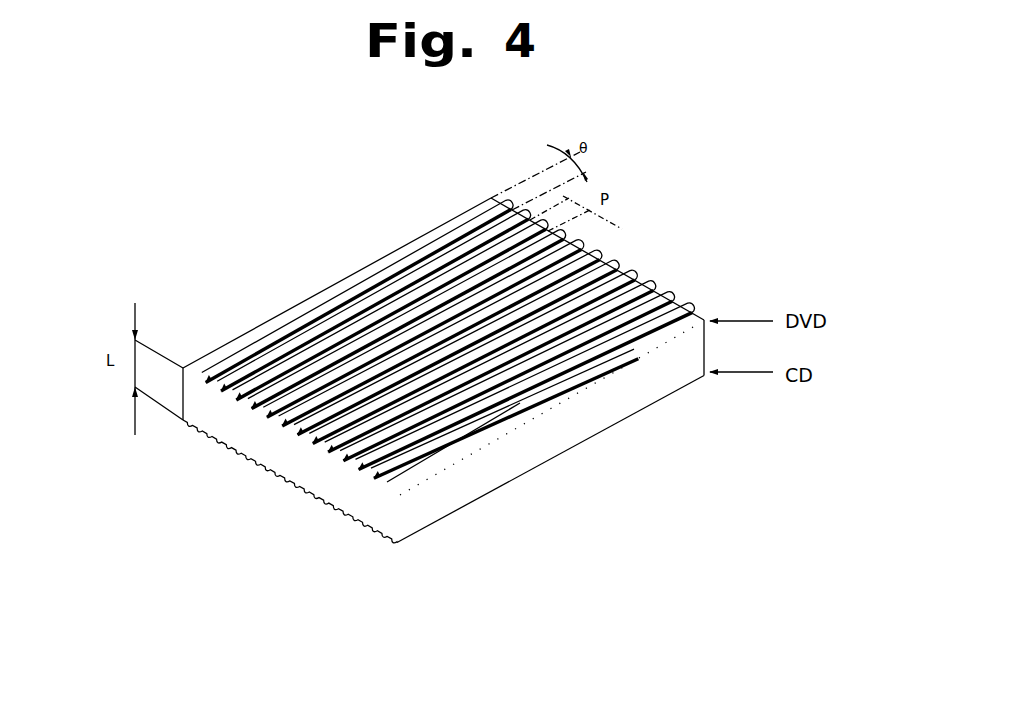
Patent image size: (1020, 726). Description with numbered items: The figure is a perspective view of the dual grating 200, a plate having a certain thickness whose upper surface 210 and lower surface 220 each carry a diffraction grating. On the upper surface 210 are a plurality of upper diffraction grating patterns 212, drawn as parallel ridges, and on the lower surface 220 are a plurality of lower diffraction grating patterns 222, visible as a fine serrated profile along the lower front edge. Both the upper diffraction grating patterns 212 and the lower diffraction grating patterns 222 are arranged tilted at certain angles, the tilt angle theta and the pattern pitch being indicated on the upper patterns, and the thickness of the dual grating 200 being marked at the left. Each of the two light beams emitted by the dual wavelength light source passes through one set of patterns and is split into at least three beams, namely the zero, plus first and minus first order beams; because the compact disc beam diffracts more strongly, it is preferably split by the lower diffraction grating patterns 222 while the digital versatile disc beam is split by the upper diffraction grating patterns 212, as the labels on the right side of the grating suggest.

The dual grating 200 is at (325, 287).
The upper surface 210 is at (704, 318).
The upper diffraction grating patterns 212 is at (673, 298).
The lower surface 220 is at (397, 544).
The lower diffraction grating patterns 222 is at (290, 485).